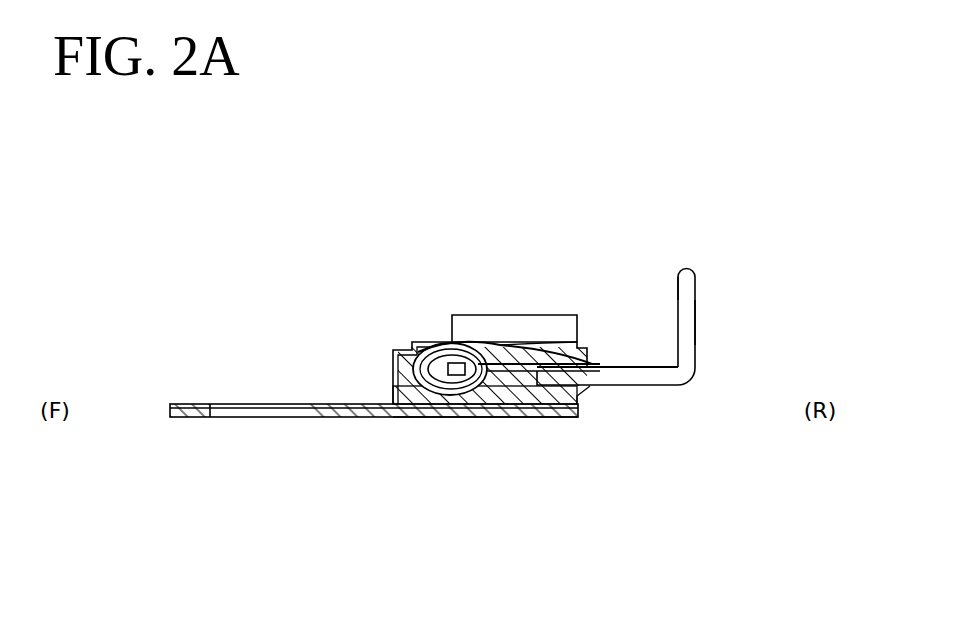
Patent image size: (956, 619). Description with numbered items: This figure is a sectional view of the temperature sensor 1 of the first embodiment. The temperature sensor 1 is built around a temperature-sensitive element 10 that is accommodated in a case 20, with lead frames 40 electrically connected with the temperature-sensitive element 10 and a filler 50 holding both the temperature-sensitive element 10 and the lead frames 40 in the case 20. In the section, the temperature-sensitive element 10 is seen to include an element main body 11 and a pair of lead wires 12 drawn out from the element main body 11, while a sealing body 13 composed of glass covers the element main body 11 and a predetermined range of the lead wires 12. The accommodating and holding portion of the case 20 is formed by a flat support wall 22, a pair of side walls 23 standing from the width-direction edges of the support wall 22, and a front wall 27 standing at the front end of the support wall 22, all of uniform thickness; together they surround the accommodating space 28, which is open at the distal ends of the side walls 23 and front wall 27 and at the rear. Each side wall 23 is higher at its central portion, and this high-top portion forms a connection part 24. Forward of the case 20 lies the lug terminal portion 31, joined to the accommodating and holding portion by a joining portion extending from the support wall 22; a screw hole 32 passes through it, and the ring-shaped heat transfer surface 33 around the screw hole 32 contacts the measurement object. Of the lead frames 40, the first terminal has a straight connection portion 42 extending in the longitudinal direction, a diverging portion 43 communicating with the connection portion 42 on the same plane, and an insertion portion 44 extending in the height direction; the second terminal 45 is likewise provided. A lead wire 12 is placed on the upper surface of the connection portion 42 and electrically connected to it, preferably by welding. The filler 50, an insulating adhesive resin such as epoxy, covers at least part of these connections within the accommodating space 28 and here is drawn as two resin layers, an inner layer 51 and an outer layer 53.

The temperature sensor 1 is at (364, 246).
The temperature-sensitive element 10 is at (518, 503).
The element main body 11 is at (453, 417).
The lead wire 12 is at (508, 417).
The sealing body 13 is at (423, 417).
The case 20 is at (358, 421).
The support wall 22 is at (552, 417).
The side wall 23 is at (506, 318).
The connection part 24 is at (563, 318).
The front wall 27 is at (393, 386).
The accommodating space 28 is at (530, 316).
The lug terminal portion 31 is at (268, 419).
The screw hole 32 is at (225, 404).
The heat transfer surface 33 is at (185, 419).
The lead frame 40 is at (655, 398).
The connection portion 42 is at (596, 367).
The diverging portion 43 is at (637, 367).
The insertion portion 44 is at (697, 343).
The second terminal 45 is at (697, 310).
The filler 50 is at (400, 238).
The inner layer 51 is at (437, 318).
The outer layer 53 is at (478, 318).